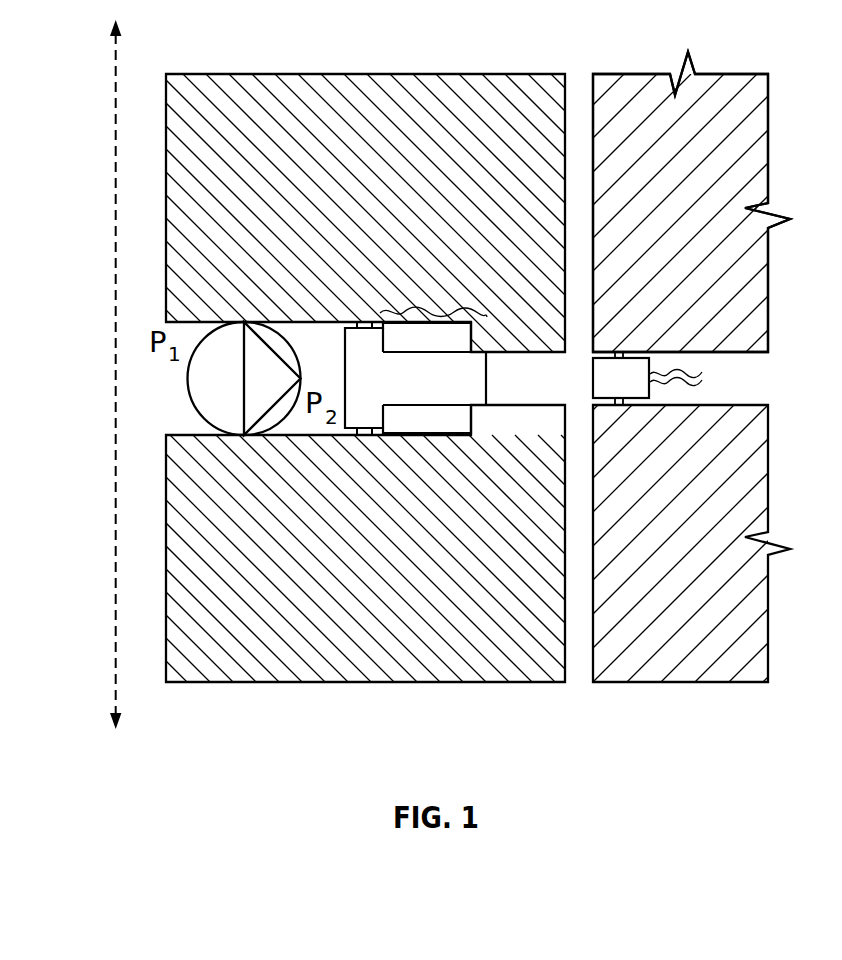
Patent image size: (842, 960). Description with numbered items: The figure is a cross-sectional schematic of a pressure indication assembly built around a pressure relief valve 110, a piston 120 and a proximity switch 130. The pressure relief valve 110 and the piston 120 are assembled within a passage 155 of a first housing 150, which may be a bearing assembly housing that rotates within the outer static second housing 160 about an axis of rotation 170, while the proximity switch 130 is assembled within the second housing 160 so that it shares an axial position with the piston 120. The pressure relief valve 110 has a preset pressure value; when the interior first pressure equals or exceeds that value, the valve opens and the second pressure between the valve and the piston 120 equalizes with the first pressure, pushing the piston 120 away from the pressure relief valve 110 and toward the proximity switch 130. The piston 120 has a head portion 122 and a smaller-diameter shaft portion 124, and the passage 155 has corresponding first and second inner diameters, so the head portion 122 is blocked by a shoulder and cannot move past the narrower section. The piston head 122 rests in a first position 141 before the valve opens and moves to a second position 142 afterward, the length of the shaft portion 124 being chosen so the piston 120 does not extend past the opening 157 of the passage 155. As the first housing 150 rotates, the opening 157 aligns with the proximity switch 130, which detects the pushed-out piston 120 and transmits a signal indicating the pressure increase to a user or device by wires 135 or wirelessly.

The pressure relief valve 110 is at (242, 393).
The piston 120 is at (442, 393).
The head portion 122 is at (363, 322).
The shaft portion 124 is at (430, 310).
The proximity switch 130 is at (644, 393).
The wires 135 is at (702, 375).
The first position 141 is at (365, 436).
The second position 142 is at (462, 436).
The first housing 150 is at (389, 187).
The passage 155 is at (317, 331).
The opening 157 is at (541, 388).
The second housing 160 is at (703, 260).
The axis of rotation 170 is at (113, 327).